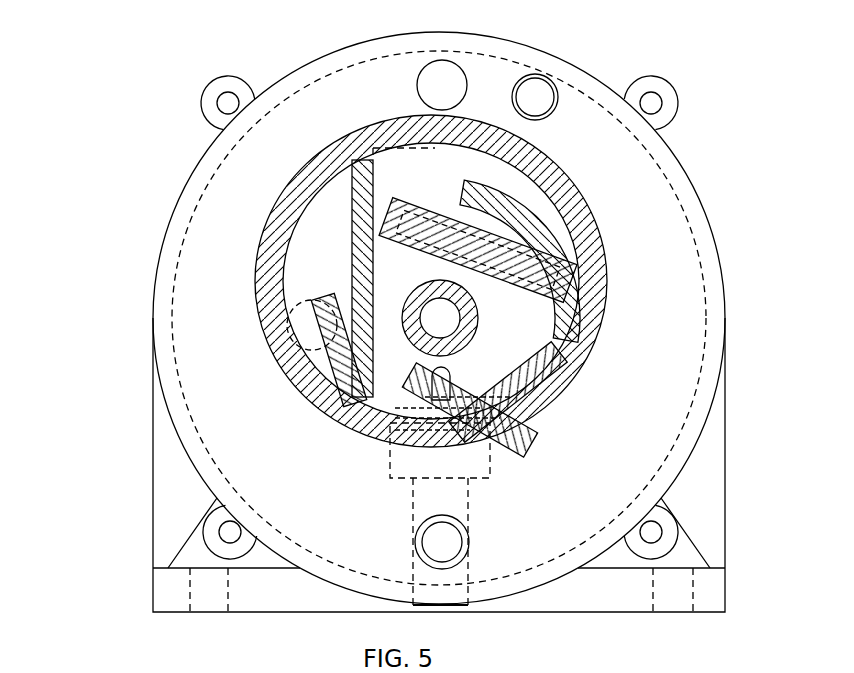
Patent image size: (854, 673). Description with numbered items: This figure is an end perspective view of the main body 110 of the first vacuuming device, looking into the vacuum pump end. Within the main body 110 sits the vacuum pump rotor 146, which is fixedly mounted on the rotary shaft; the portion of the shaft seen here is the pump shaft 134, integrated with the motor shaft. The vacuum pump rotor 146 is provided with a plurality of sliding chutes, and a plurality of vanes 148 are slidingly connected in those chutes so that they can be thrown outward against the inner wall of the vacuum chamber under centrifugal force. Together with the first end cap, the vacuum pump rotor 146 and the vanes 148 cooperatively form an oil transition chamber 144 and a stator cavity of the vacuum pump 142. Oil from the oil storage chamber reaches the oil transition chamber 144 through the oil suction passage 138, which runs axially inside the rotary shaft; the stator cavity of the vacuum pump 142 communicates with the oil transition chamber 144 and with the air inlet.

The main body 110 is at (200, 295).
The pump shaft 134 is at (480, 372).
The oil suction passage 138 is at (417, 343).
The stator cavity of the vacuum pump 142 is at (300, 402).
The oil transition chamber 144 is at (470, 283).
The vacuum pump rotor 146 is at (570, 242).
The vanes 148 is at (353, 217).